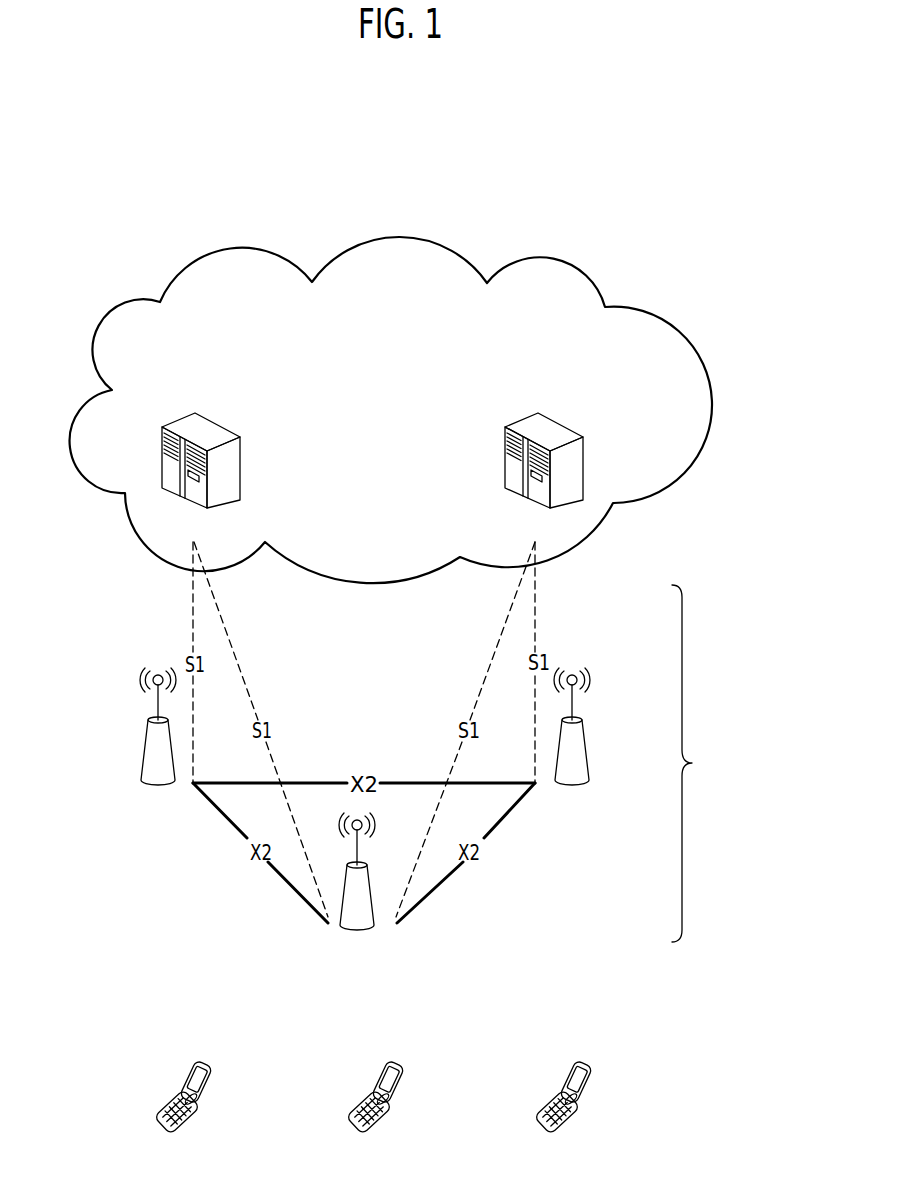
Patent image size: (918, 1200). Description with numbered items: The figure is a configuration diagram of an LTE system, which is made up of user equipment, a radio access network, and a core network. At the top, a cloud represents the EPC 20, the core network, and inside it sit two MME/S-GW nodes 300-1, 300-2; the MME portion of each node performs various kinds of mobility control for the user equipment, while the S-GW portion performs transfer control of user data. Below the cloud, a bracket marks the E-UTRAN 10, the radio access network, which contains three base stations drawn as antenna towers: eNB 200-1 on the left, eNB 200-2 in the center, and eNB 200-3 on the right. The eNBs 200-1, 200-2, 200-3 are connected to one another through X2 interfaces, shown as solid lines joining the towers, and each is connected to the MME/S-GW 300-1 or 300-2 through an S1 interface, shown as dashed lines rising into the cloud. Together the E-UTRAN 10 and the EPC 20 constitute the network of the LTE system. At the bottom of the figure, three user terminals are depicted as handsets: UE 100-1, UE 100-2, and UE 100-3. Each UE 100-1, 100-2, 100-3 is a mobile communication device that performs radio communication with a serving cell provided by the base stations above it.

The E-UTRAN 10 is at (730, 763).
The EPC 20 is at (583, 270).
The UE 100-1 is at (202, 1062).
The UE 100-2 is at (394, 1062).
The UE 100-3 is at (582, 1062).
The eNB 200-1 is at (147, 751).
The eNB 200-2 is at (374, 903).
The eNB 200-3 is at (610, 724).
The MME/S-GW 300-1 is at (222, 426).
The MME/S-GW 300-2 is at (548, 426).